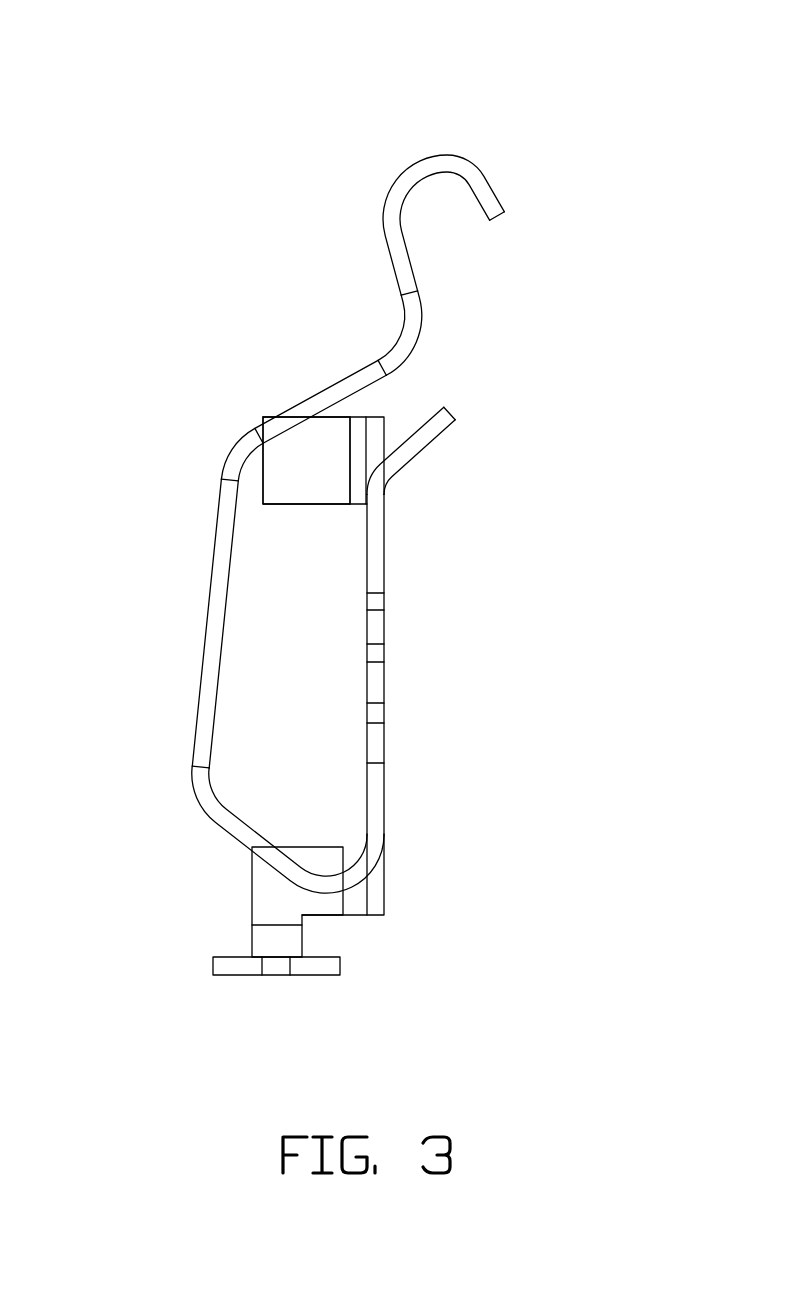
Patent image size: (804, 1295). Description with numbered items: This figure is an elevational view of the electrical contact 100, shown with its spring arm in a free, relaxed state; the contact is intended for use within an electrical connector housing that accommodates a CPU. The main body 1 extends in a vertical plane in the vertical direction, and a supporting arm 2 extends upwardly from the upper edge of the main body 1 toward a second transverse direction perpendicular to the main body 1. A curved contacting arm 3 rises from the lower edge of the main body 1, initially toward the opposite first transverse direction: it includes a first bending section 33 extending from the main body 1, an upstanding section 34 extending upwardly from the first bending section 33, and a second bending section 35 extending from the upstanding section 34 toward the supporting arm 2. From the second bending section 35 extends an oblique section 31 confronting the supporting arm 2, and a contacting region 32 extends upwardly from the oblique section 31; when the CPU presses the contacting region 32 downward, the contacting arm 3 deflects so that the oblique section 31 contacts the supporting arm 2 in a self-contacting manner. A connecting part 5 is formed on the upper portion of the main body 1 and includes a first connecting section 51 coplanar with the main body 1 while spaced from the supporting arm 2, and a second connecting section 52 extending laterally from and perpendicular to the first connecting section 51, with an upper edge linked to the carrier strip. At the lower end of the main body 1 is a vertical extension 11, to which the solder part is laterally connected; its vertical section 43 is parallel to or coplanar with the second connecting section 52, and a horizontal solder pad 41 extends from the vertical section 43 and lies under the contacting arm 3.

The electrical contact 100 is at (380, 163).
The main body 1 is at (377, 630).
The vertical extension 11 is at (378, 880).
The supporting arm 2 is at (418, 443).
The contacting arm 3 is at (207, 735).
The oblique section 31 is at (408, 328).
The contacting region 32 is at (438, 163).
The first bending section 33 is at (240, 835).
The upstanding section 34 is at (215, 637).
The second bending section 35 is at (315, 402).
The connecting part 5 is at (332, 438).
The first connecting section 51 is at (380, 438).
The second connecting section 52 is at (288, 478).
The horizontal solder pad 41 is at (312, 965).
The vertical section 43 is at (317, 905).